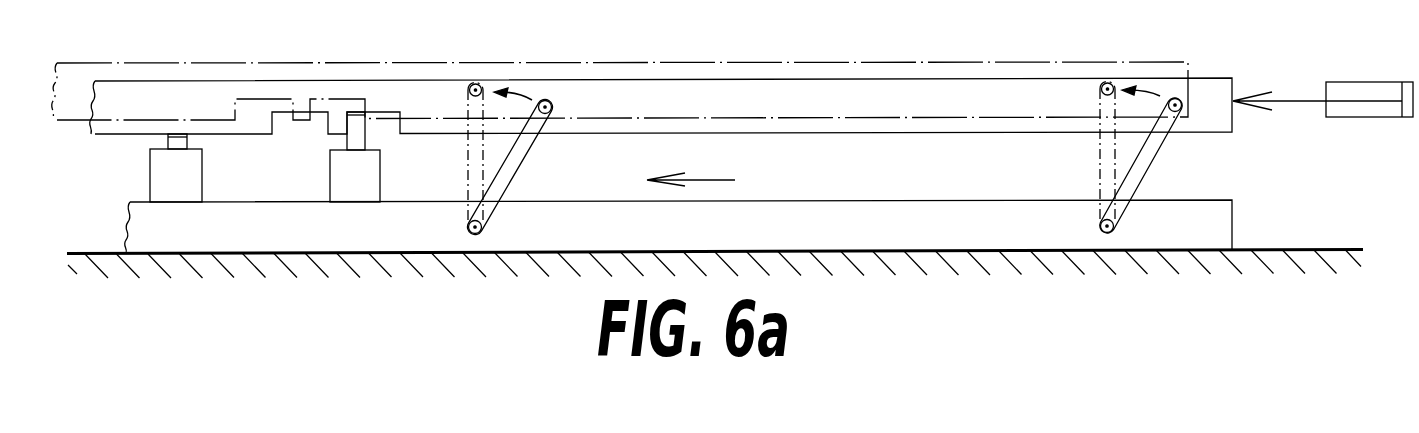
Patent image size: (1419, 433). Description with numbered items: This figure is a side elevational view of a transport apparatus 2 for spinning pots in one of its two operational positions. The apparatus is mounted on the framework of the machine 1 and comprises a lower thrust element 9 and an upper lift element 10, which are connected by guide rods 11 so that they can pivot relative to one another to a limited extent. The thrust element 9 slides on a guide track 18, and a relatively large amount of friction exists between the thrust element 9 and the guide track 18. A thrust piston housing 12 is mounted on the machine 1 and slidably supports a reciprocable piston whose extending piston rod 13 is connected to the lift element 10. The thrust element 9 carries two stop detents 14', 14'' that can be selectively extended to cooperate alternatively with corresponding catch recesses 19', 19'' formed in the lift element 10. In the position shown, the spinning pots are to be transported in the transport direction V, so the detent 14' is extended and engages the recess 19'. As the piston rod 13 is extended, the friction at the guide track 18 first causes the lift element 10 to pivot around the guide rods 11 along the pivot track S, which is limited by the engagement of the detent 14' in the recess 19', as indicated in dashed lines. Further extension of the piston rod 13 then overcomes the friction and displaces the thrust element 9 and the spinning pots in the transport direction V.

The machine 1 is at (252, 318).
The transport apparatus 2 is at (417, 287).
The thrust element 9 is at (876, 213).
The lift element 10 is at (858, 92).
The guide rods 11 is at (512, 175).
The thrust piston housing 12 is at (1352, 100).
The piston rod 13 is at (1293, 100).
The stop detent 14' is at (385, 157).
The stop detent 14'' is at (209, 168).
The guide track 18 is at (99, 251).
The catch recess 19' is at (378, 67).
The catch recess 19'' is at (274, 78).
The pivot direction S is at (523, 97).
The transport direction V is at (707, 177).